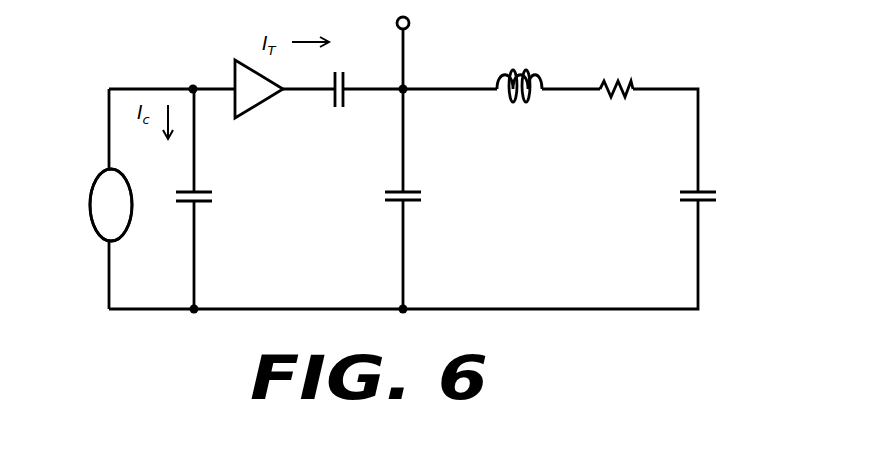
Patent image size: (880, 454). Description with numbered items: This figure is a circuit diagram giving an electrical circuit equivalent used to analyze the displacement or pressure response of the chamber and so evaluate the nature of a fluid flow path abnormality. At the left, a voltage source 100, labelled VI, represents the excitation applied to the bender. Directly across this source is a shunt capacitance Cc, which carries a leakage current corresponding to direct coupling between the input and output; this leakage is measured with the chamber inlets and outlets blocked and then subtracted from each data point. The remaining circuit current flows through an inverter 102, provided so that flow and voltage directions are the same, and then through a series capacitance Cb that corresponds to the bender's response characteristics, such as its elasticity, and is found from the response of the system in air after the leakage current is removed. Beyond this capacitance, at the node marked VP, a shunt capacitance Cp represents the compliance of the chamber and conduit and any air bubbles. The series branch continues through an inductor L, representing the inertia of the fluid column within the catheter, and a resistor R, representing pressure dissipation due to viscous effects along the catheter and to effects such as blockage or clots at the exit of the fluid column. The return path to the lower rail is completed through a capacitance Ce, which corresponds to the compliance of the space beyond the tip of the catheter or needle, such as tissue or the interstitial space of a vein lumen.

The voltage source 100 is at (101, 184).
The inverter 102 is at (236, 72).
The input voltage source VI is at (87, 223).
The shunt capacitance Cc is at (207, 205).
The capacitance Cb is at (337, 103).
The shunt capacitance Cp is at (415, 205).
The capacitance Ce is at (710, 206).
The series inductor L is at (518, 75).
The resistor R is at (613, 73).
The output voltage terminal VP is at (417, 26).